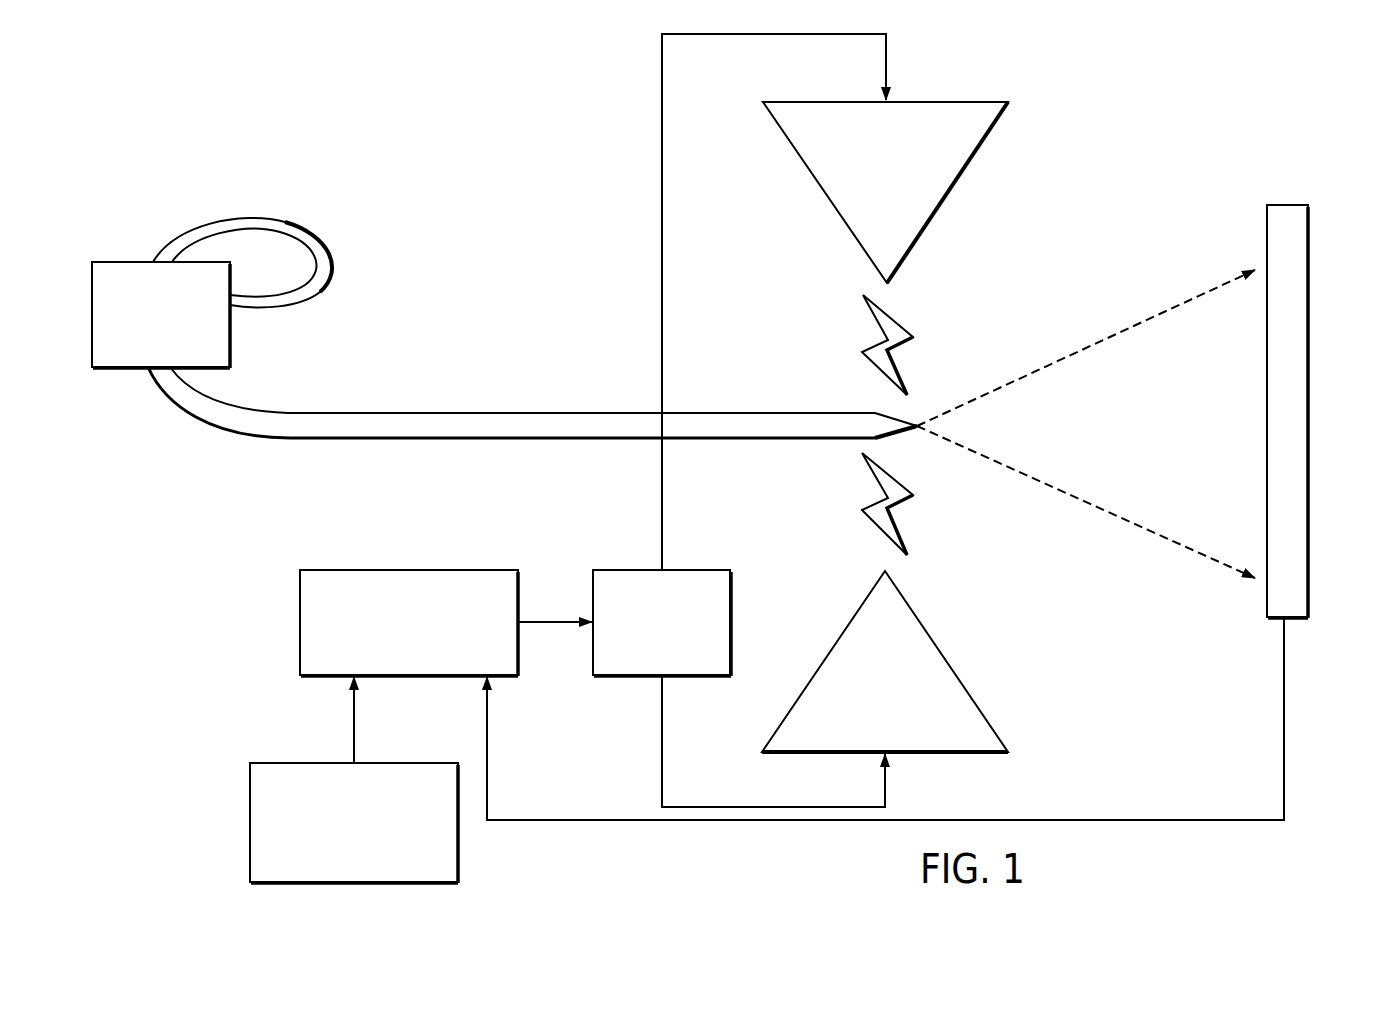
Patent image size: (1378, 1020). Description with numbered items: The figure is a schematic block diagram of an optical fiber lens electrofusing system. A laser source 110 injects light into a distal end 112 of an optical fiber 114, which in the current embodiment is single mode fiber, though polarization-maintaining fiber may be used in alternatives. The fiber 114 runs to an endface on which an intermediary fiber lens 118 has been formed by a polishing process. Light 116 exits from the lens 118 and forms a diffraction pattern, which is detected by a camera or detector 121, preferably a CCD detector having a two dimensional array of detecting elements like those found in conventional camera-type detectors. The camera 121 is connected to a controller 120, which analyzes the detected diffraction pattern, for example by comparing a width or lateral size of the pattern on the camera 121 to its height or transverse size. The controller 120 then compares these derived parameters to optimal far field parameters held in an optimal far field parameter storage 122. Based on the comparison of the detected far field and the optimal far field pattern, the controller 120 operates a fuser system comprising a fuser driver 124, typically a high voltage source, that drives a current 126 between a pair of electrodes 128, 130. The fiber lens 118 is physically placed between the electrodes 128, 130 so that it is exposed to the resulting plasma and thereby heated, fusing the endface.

The laser source 110 is at (143, 261).
The distal end 112 is at (232, 292).
The optical fiber 114 is at (378, 413).
The light 116 is at (1038, 365).
The fiber lens 118 is at (902, 433).
The controller 120 is at (490, 568).
The camera or detector 121 is at (1310, 458).
The optimal far field parameter storage 122 is at (250, 803).
The fuser driver 124 is at (731, 604).
The current 126 is at (903, 318).
The electrode 128 is at (965, 167).
The electrode 130 is at (930, 628).